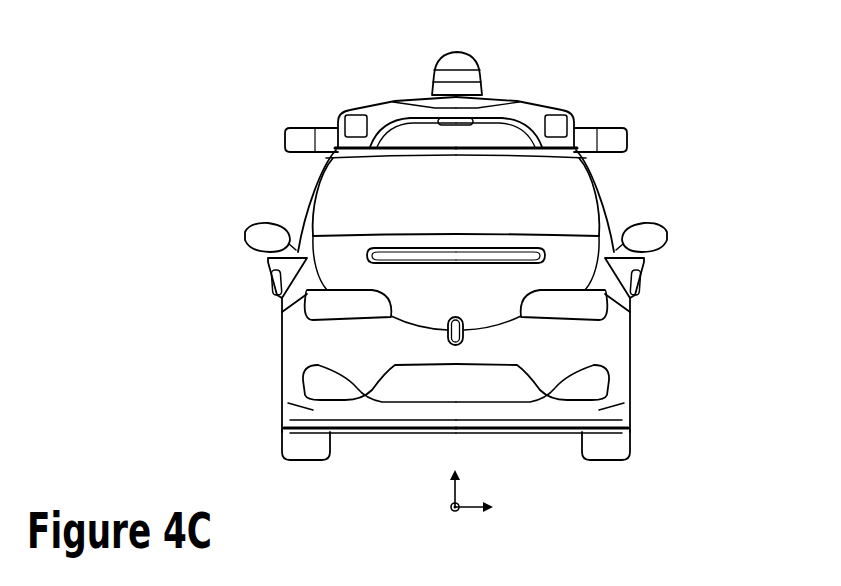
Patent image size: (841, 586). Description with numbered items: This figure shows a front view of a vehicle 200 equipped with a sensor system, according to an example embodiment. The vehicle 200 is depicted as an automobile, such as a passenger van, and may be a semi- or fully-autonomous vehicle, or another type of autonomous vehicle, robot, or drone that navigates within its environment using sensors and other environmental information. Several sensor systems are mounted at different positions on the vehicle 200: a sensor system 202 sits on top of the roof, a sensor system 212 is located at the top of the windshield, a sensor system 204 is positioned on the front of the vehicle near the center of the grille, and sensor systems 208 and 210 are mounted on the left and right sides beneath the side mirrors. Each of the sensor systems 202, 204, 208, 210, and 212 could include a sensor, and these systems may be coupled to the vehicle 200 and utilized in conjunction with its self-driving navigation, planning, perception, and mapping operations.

The vehicle 200 is at (660, 85).
The sensor system 202 is at (473, 61).
The sensor system 204 is at (457, 345).
The sensor system 208 is at (270, 278).
The sensor system 210 is at (641, 285).
The sensor system 212 is at (453, 127).